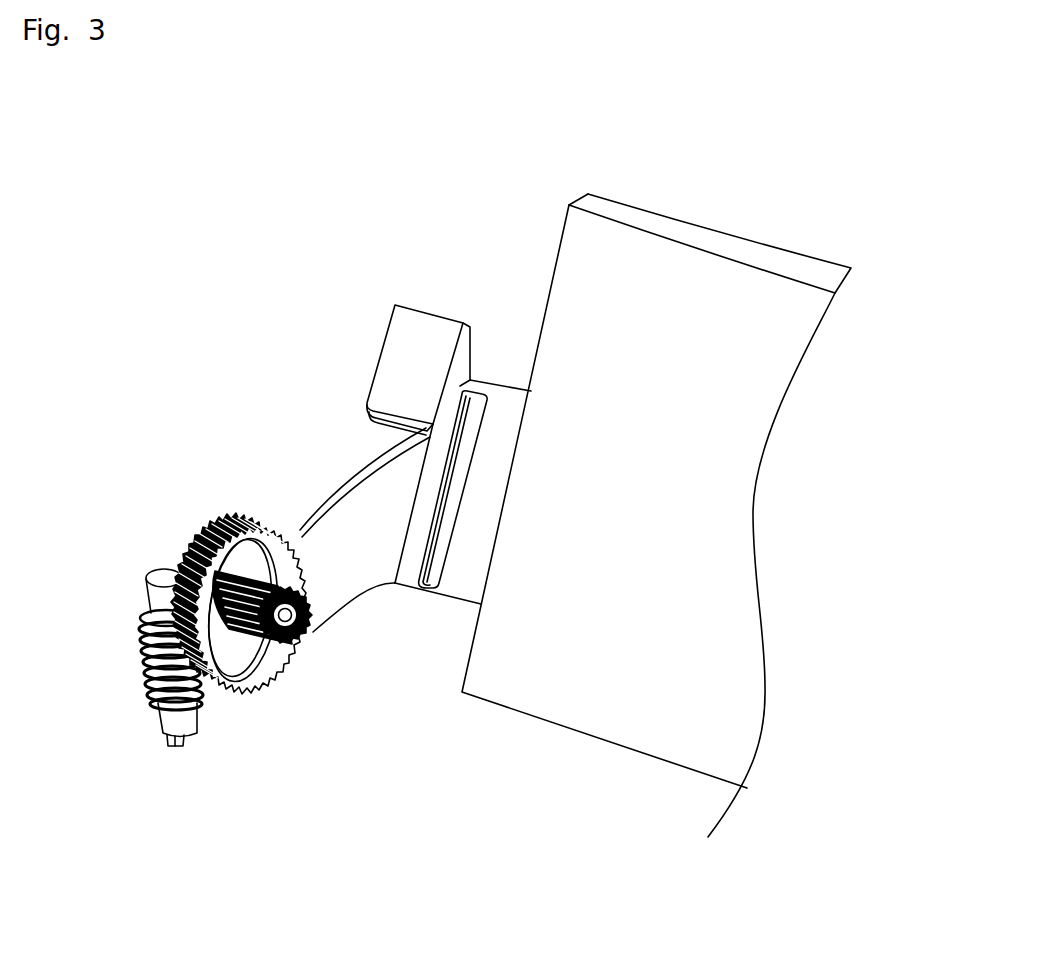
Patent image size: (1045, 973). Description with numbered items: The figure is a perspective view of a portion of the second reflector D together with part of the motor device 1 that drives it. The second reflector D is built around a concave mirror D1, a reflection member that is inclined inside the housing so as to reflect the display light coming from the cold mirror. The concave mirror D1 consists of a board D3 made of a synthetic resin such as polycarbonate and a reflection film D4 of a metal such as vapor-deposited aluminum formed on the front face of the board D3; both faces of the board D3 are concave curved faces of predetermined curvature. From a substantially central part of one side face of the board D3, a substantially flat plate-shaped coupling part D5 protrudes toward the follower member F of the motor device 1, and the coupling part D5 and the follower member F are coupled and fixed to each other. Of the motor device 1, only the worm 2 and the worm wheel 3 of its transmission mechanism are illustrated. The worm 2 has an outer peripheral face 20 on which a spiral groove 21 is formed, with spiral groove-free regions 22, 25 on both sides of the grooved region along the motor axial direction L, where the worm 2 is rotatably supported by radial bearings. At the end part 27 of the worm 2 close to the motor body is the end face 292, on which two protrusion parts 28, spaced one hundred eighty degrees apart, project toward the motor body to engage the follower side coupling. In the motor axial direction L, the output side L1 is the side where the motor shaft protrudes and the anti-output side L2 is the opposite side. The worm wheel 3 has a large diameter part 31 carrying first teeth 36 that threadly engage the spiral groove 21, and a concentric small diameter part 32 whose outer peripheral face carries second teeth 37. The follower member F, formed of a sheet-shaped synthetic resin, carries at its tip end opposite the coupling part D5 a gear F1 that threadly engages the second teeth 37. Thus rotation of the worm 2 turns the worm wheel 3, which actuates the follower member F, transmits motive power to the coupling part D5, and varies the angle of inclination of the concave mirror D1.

The second reflector D is at (545, 515).
The concave mirror D1 is at (560, 238).
The board D3 is at (745, 252).
The reflection film D4 is at (735, 520).
The coupling part D5 is at (508, 420).
The follower member F is at (385, 468).
The gear F1 is at (303, 568).
The motor axial direction L is at (165, 580).
The output side L1 is at (148, 509).
The anti-output side L2 is at (187, 740).
The motor device 1 is at (205, 652).
The worm 2 is at (148, 652).
The worm wheel 3 is at (261, 592).
The outer peripheral face 20 is at (130, 660).
The spiral groove 21 is at (147, 660).
The spiral groove-free region 22 is at (167, 718).
The spiral groove-free region 25 is at (158, 603).
The end part 27 is at (152, 769).
The protrusion parts 28 is at (168, 746).
The end face 292 is at (185, 736).
The large diameter part 31 is at (239, 581).
The first teeth 36 is at (225, 517).
The small diameter part 32 is at (283, 634).
The second teeth 37 is at (292, 640).